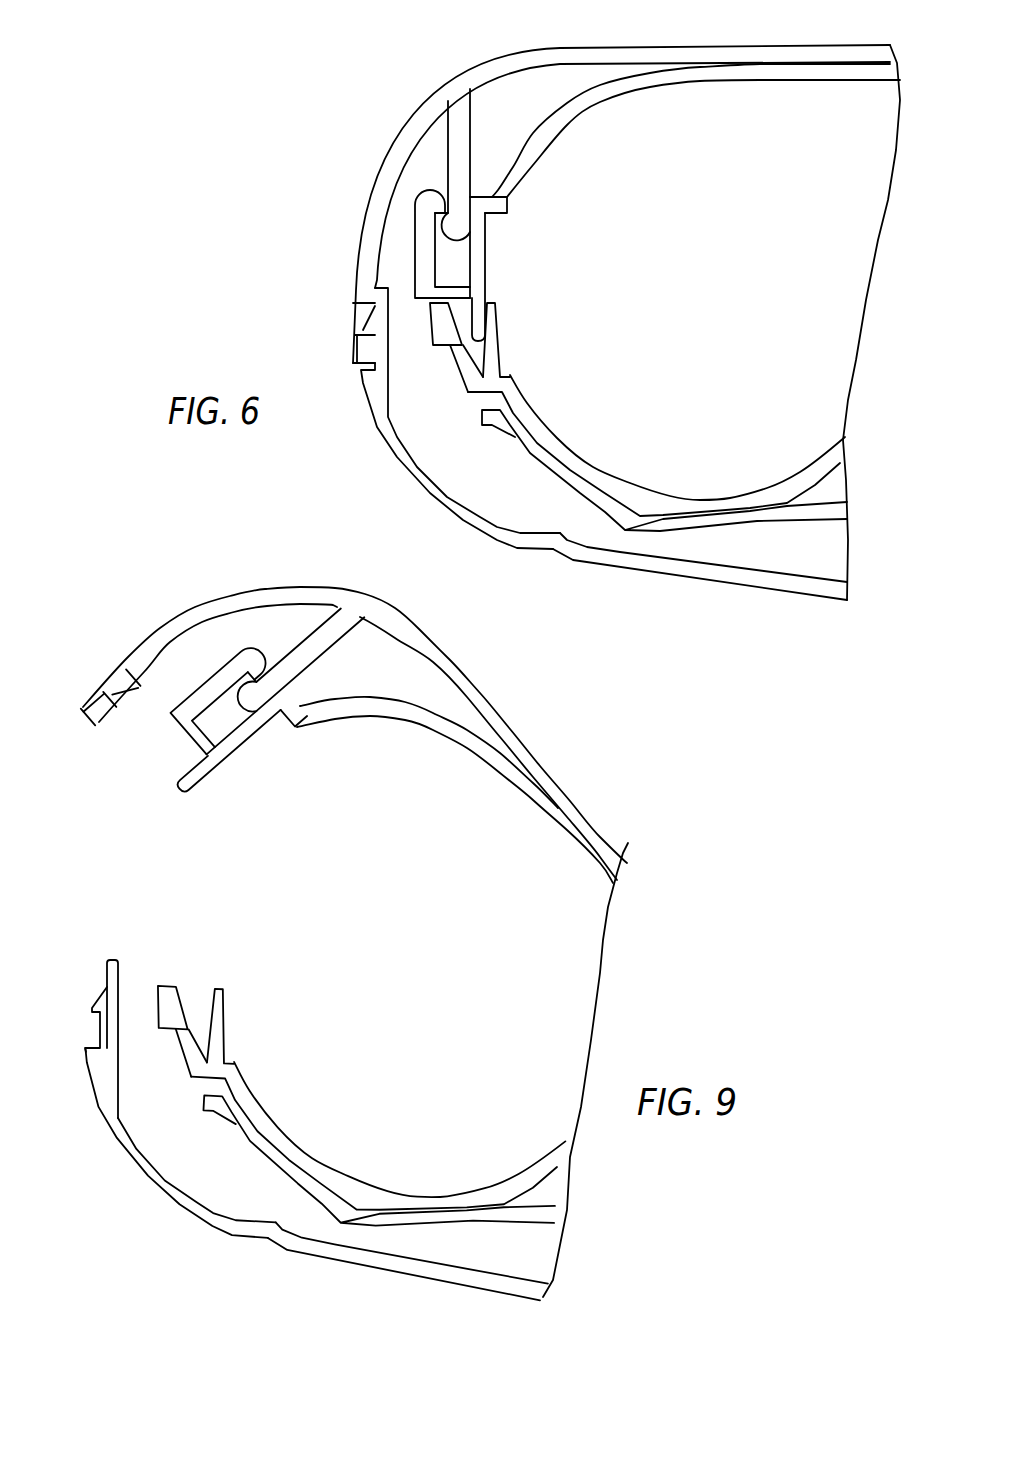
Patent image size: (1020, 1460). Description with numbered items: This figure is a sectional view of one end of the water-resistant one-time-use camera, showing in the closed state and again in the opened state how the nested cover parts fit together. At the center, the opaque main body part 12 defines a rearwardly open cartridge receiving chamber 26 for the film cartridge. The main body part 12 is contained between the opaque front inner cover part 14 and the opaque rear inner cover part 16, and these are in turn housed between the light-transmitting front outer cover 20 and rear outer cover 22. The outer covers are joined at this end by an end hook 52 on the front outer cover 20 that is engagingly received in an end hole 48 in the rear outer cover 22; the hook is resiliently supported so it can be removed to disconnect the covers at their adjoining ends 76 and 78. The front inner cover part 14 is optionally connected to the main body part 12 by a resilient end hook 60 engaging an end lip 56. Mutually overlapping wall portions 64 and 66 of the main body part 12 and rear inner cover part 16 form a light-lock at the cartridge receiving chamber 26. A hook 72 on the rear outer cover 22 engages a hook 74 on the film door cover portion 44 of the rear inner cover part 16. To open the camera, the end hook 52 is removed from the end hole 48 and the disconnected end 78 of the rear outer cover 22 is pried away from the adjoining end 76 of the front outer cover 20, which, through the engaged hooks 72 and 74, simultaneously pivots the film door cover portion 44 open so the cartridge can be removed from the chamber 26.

In FIG. 6, the main body part 12 is at (672, 495).
In FIG. 9, the main body part 12 is at (365, 1178).
In FIG. 6, the front inner cover part 14 is at (775, 527).
In FIG. 9, the front inner cover part 14 is at (410, 1230).
In FIG. 6, the rear inner cover part 16 is at (764, 90).
In FIG. 9, the rear inner cover part 16 is at (451, 742).
In FIG. 6, the front outer cover 20 is at (693, 585).
In FIG. 9, the front outer cover 20 is at (266, 1242).
In FIG. 6, the rear outer cover 22 is at (684, 46).
In FIG. 9, the rear outer cover 22 is at (521, 717).
In FIG. 6, the cartridge receiving chamber 26 is at (690, 272).
In FIG. 9, the cartridge receiving chamber 26 is at (390, 1034).
In FIG. 6, the film door cover portion 44 is at (640, 89).
In FIG. 9, the film door cover portion 44 is at (363, 718).
In FIG. 6, the end hole 48 is at (356, 312).
In FIG. 9, the end hole 48 is at (118, 680).
In FIG. 6, the end hook 52 is at (363, 326).
In FIG. 9, the end hook 52 is at (95, 1006).
In FIG. 6, the end lip 56 is at (460, 362).
In FIG. 9, the end lip 56 is at (188, 1043).
In FIG. 6, the end hook 60 is at (432, 323).
In FIG. 9, the end hook 60 is at (162, 1010).
In FIG. 6, the wall portion 64 is at (526, 340).
In FIG. 9, the wall portion 64 is at (225, 1013).
In FIG. 6, the wall portion 66 is at (479, 296).
In FIG. 9, the wall portion 66 is at (193, 774).
In FIG. 6, the hook 72 is at (458, 233).
In FIG. 9, the hook 72 is at (253, 700).
In FIG. 6, the hook 74 is at (427, 200).
In FIG. 9, the hook 74 is at (247, 650).
In FIG. 6, the adjoining end 76 is at (371, 410).
In FIG. 9, the adjoining end 76 is at (97, 1070).
In FIG. 6, the adjoining end 78 is at (360, 290).
In FIG. 9, the adjoining end 78 is at (145, 657).